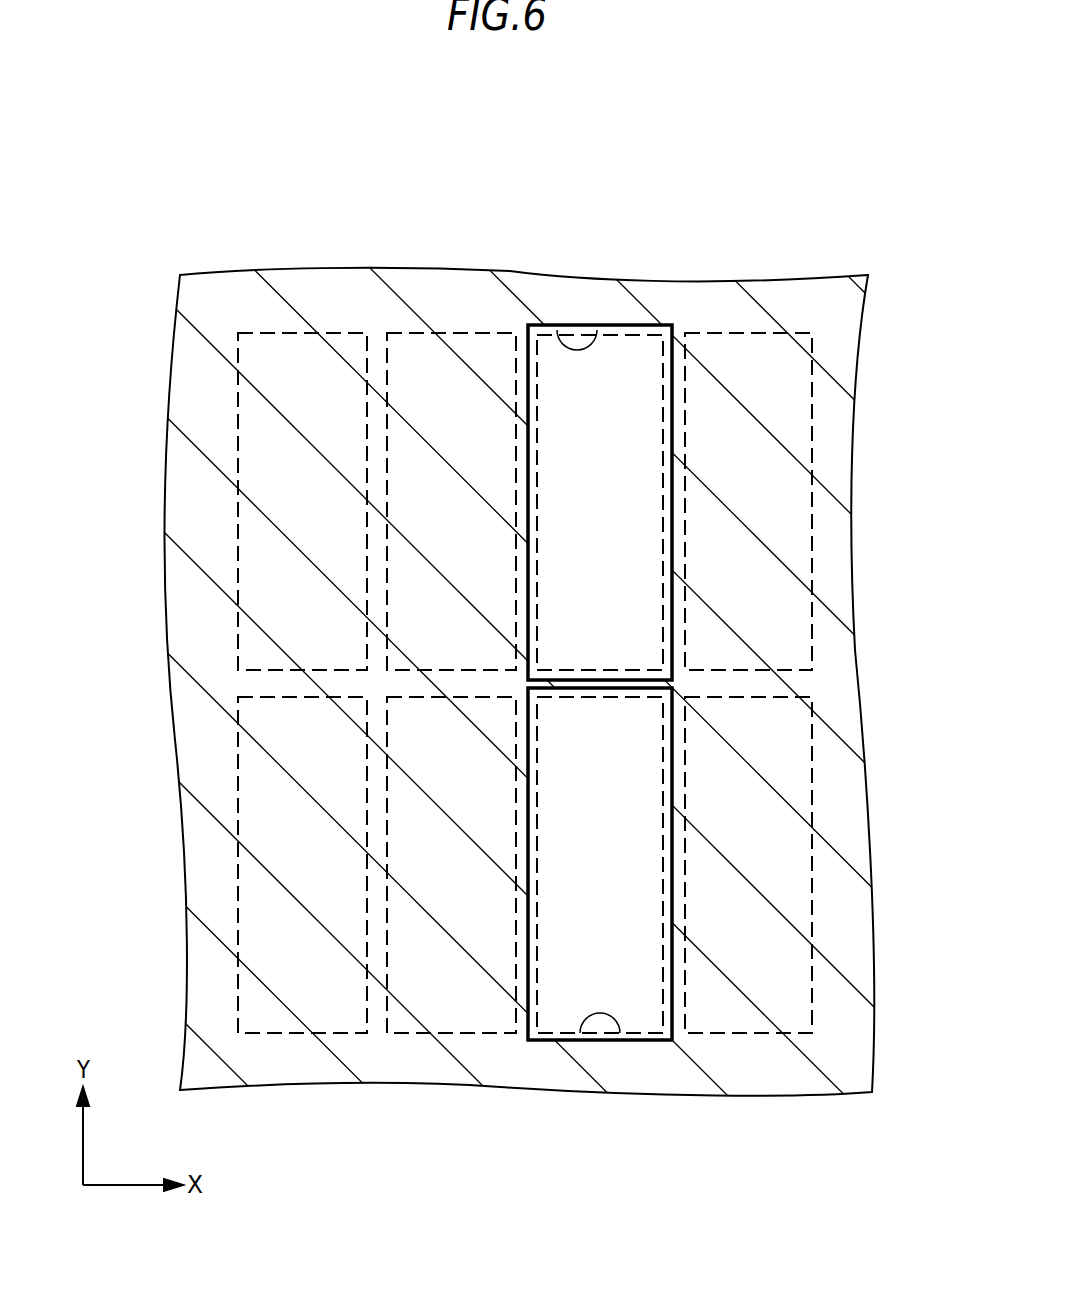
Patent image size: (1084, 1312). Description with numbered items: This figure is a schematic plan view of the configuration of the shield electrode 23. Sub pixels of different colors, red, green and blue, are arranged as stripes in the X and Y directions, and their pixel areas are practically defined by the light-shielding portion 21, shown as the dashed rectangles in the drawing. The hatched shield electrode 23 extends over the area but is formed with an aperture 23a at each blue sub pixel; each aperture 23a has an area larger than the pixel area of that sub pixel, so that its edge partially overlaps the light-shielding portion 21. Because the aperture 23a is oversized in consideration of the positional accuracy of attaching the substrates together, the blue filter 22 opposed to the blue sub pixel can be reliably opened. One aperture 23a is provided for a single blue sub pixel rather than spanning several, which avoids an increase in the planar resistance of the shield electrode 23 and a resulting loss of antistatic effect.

The light-shielding portion 21 is at (222, 683).
The blue filter 22 is at (600, 578).
The shield electrode 23 is at (842, 683).
The aperture 23a is at (597, 330).